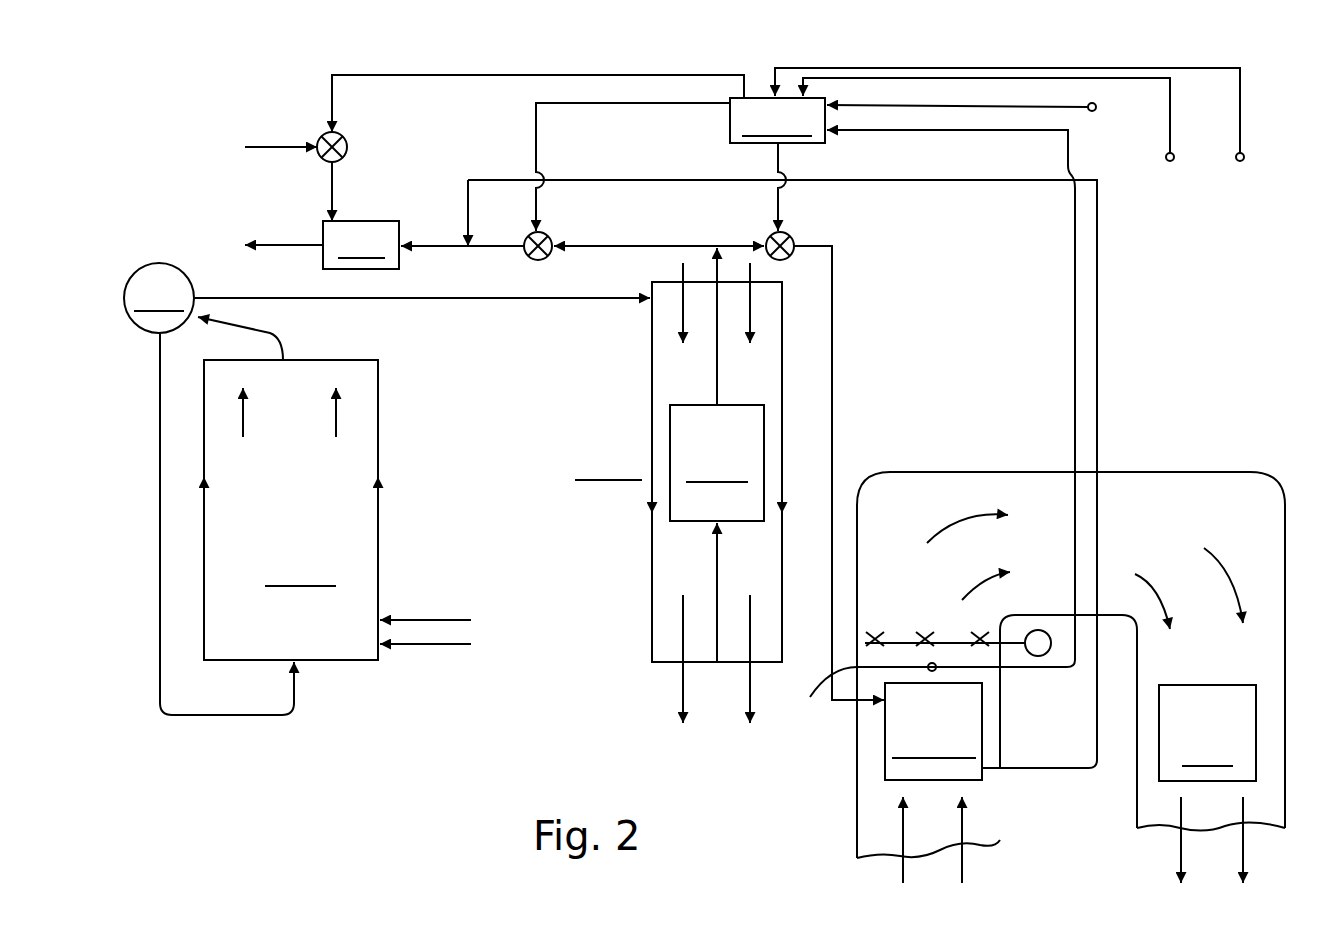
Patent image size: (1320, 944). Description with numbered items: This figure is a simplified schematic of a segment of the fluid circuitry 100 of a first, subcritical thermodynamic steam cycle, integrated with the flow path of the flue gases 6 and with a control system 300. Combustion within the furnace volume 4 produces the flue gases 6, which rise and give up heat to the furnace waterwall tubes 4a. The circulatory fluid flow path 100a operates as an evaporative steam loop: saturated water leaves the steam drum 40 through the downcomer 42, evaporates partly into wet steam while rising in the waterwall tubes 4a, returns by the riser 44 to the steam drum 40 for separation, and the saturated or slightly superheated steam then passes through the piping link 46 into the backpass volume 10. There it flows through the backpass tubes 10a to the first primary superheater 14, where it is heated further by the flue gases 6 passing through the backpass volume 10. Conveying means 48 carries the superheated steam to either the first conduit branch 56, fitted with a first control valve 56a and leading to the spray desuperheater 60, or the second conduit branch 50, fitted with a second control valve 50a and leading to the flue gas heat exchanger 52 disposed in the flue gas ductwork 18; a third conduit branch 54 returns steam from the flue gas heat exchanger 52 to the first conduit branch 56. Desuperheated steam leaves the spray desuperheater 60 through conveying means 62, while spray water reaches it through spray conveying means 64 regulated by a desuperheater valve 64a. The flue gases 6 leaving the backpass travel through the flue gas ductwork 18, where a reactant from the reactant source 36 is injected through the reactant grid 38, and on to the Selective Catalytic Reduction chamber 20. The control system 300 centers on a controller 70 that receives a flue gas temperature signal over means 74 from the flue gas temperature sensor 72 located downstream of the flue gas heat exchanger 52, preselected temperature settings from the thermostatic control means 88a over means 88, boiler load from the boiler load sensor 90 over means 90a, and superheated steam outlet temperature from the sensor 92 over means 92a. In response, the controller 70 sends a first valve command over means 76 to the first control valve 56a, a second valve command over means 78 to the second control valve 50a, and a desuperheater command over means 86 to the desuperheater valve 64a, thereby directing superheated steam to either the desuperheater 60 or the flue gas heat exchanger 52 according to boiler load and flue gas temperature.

The furnace volume 4 is at (302, 515).
The furnace waterwall tubes 4a is at (204, 605).
The flue gases 6 is at (336, 428).
The backpass volume 10 is at (702, 386).
The backpass tubes 10a is at (652, 555).
The first primary superheater 14 is at (730, 446).
The flue gas ductwork 18 is at (1013, 472).
The Selective Catalytic Reduction chamber 20 is at (1207, 733).
The reactant source 36 is at (1045, 658).
The reactant grid 38 is at (948, 643).
The steam drum 40 is at (140, 326).
The downcomer 42 is at (160, 626).
The riser 44 is at (276, 333).
The piping link 46 is at (486, 298).
The first means for conveying superheated steam 48 is at (717, 358).
The second conduit branch 50 is at (740, 246).
The second control valve 50a is at (790, 236).
The flue gas heat exchanger 52 is at (948, 718).
The third conduit branch 54 is at (495, 180).
The first conduit branch 56 is at (450, 246).
The first control valve 56a is at (548, 232).
The spray desuperheater 60 is at (323, 262).
The desuperheated steam conveying means 62 is at (286, 245).
The spray conveying means 64 is at (332, 180).
The desuperheater valve 64a is at (320, 135).
The controller 70 is at (748, 143).
The flue gas temperature sensor 72 is at (926, 685).
The flue gas temperature signal conveying means 74 is at (995, 130).
The first valve command signal conveying means 76 is at (536, 110).
The second valve command signal conveying means 78 is at (790, 208).
The desuperheater command signal conveying means 86 is at (436, 75).
The preselected temperature signal conveying means 88 is at (955, 104).
The thermostatic control means 88a is at (1088, 104).
The boiler load sensor 90 is at (1244, 156).
The boiler load signal conveying means 90a is at (1242, 108).
The superheated steam outlet temperature sensor 92 is at (1174, 156).
The superheated steam outlet temperature signal conveying means 92a is at (1172, 108).
The fluid circuitry 100 is at (605, 722).
The circulatory fluid flow path 100a is at (312, 726).
The control system 300 is at (1207, 245).